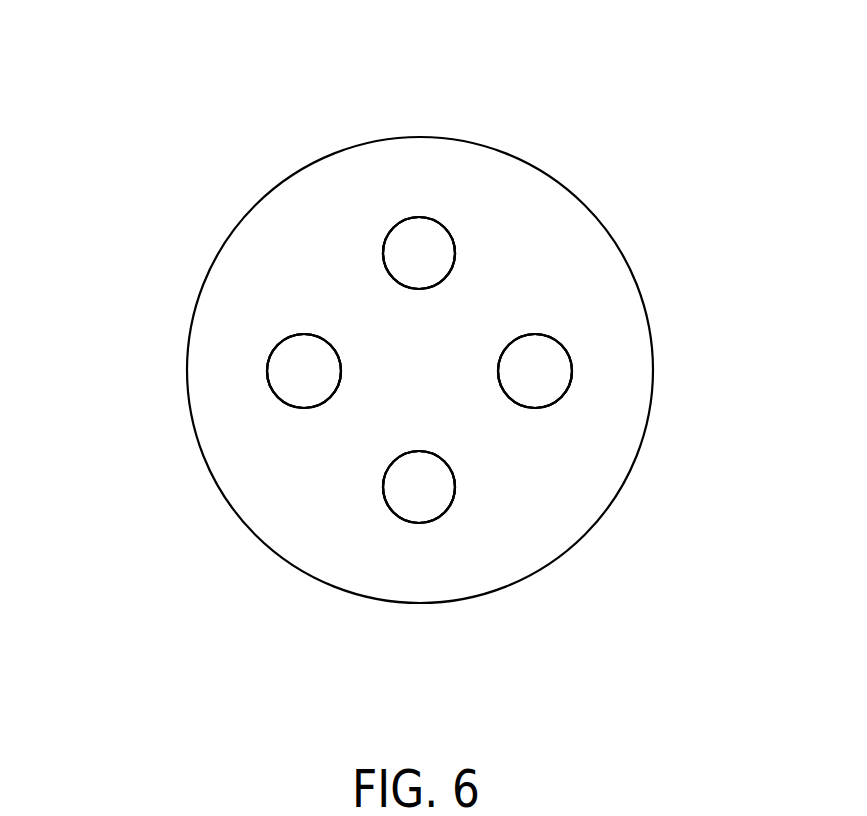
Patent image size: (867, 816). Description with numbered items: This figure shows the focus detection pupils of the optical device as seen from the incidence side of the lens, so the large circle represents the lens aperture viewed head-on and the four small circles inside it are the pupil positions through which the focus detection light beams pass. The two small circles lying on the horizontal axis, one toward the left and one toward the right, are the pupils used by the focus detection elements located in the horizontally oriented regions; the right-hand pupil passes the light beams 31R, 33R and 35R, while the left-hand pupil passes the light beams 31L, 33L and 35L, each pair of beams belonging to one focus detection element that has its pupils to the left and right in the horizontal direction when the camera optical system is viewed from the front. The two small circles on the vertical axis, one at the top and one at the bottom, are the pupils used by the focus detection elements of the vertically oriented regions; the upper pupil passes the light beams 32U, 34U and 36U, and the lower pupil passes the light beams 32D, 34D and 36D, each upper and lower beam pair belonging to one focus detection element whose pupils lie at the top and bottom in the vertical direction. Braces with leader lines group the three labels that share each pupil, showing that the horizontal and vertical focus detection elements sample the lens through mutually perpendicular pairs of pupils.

The light beam 32U is at (419, 240).
The light beam 34U is at (419, 160).
The light beam 36U is at (449, 160).
The light beam 32D is at (421, 500).
The light beam 34D is at (419, 577).
The light beam 36D is at (448, 577).
The light beam 31R is at (290, 372).
The light beam 33R is at (202, 371).
The light beam 35R is at (202, 371).
The light beam 31L is at (550, 370).
The light beam 33L is at (638, 371).
The light beam 35L is at (638, 374).